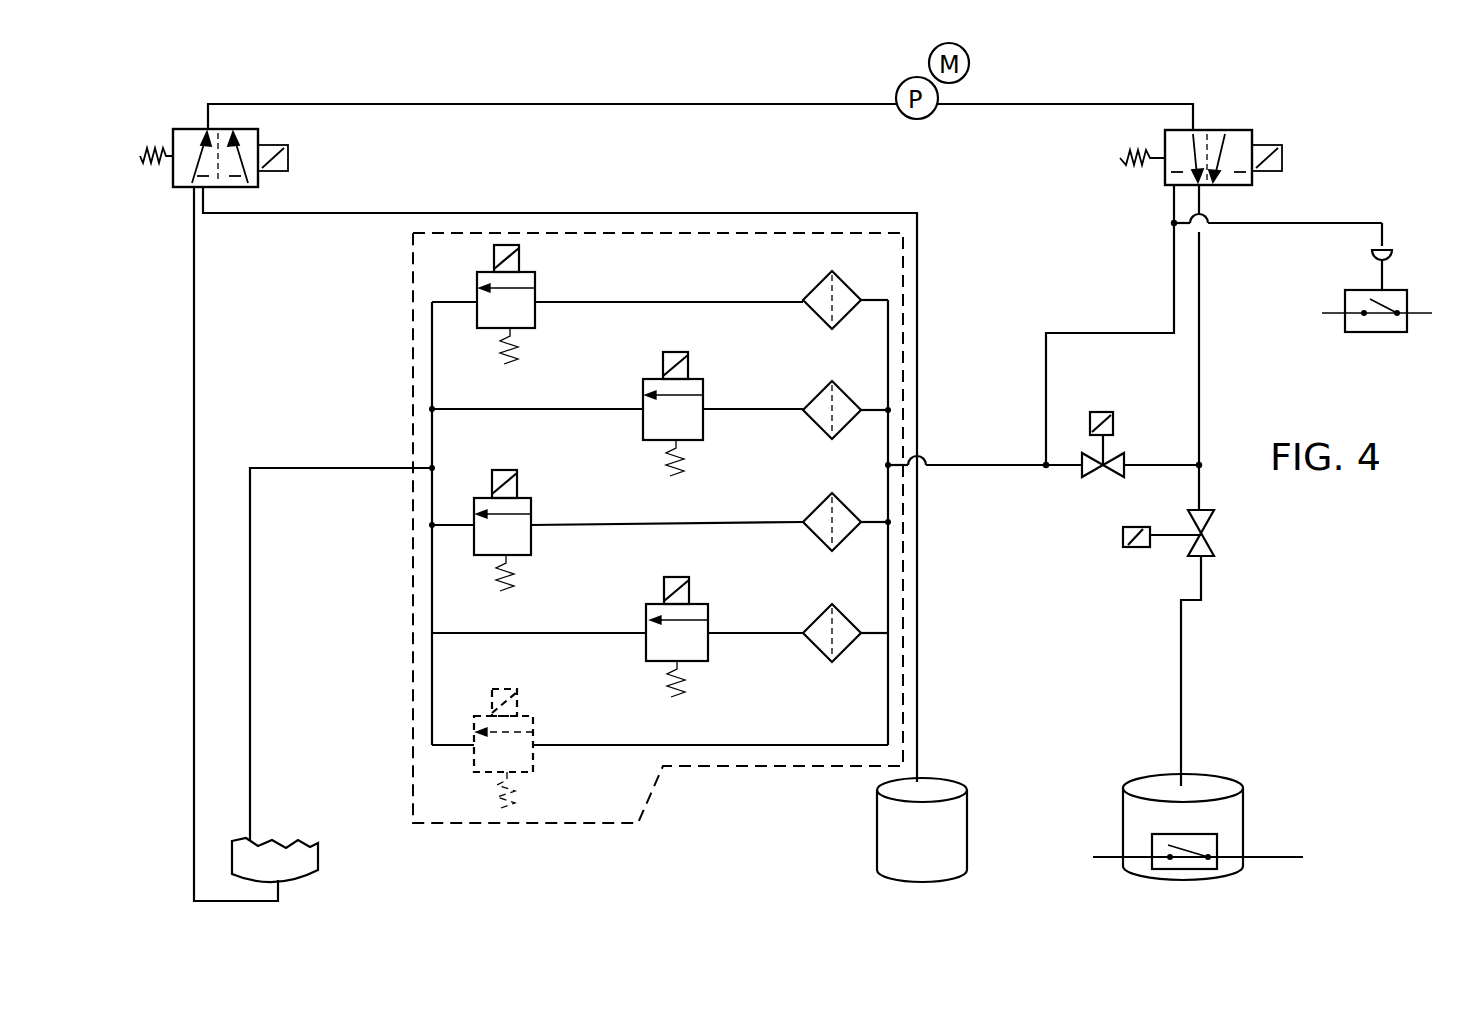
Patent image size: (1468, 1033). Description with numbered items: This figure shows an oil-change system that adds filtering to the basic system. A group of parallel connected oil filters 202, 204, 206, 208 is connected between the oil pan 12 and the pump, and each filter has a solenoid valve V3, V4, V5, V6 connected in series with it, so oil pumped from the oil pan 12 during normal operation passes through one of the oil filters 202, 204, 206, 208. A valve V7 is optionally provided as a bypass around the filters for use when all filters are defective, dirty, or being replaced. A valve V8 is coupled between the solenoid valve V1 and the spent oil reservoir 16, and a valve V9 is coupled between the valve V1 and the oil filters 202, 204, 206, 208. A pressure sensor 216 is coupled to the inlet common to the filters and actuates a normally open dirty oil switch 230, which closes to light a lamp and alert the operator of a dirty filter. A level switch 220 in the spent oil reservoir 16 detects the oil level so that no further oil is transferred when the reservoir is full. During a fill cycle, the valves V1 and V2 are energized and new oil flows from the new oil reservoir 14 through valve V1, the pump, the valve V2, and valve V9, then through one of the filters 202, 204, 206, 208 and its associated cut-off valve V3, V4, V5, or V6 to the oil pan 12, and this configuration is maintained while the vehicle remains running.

The solenoid valve V1 is at (1223, 130).
The solenoid valve V2 is at (192, 128).
The solenoid valve V3 is at (535, 290).
The solenoid valve V4 is at (690, 378).
The solenoid valve V5 is at (532, 500).
The solenoid valve V6 is at (695, 603).
The valve V7 is at (535, 727).
The valve V8 is at (1215, 538).
The valve V9 is at (1108, 460).
The oil filter 202 is at (815, 286).
The oil filter 204 is at (813, 396).
The oil filter 206 is at (812, 512).
The oil filter 208 is at (818, 612).
The oil pan 12 is at (318, 864).
The new oil reservoir 14 is at (967, 800).
The spent oil reservoir 16 is at (1240, 793).
The pressure sensor 216 is at (1386, 262).
The level switch 220 is at (1220, 842).
The dirty oil switch 230 is at (1368, 333).